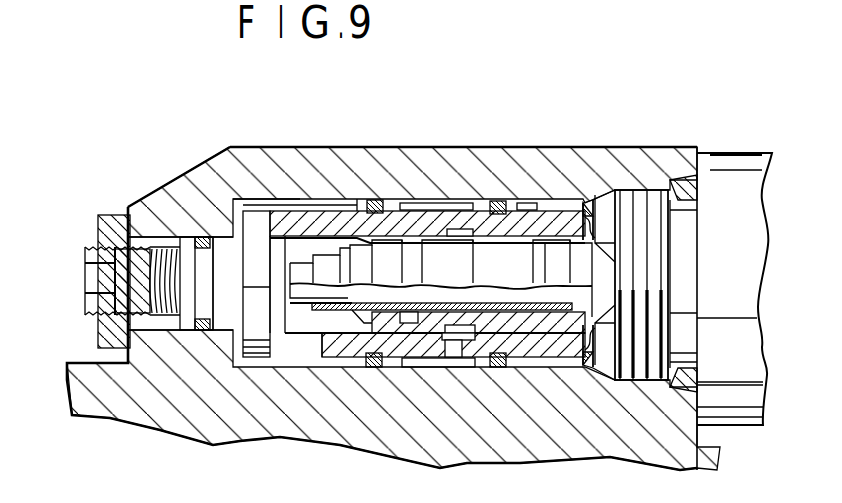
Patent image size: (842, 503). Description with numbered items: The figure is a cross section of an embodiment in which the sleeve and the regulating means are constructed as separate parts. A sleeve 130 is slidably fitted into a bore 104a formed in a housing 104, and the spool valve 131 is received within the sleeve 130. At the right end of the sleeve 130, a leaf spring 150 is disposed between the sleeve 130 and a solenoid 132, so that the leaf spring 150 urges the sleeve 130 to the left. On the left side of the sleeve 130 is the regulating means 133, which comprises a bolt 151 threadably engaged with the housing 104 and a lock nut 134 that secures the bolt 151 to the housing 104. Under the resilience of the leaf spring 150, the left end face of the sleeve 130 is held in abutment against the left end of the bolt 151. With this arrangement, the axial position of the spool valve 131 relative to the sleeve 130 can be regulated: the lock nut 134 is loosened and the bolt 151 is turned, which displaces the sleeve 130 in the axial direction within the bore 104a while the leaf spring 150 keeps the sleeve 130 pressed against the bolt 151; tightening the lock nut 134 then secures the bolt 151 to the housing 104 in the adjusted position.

The housing 104 is at (477, 147).
The bore 104a is at (533, 199).
The sleeve 130 is at (312, 211).
The spool valve 131 is at (385, 312).
The solenoid 132 is at (718, 147).
The regulating means 133 is at (80, 278).
The lock nut 134 is at (113, 215).
The leaf spring 150 is at (588, 362).
The bolt 151 is at (153, 247).